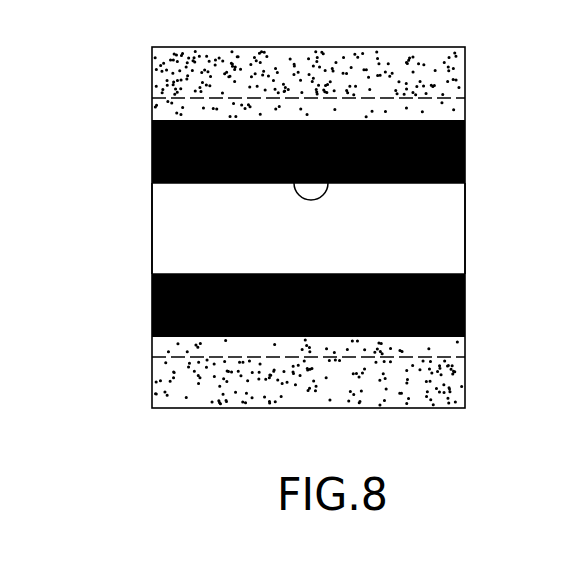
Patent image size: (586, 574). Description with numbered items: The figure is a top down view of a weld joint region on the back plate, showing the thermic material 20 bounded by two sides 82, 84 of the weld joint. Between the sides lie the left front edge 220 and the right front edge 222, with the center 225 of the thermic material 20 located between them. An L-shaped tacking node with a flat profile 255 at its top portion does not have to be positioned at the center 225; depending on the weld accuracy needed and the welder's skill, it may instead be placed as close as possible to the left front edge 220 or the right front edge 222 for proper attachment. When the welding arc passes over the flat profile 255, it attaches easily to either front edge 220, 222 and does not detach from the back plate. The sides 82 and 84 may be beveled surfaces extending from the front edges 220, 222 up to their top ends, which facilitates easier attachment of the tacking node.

The side of the weld joint 82 is at (465, 152).
The side of the weld joint 84 is at (465, 305).
The thermic material 20 is at (177, 218).
The left front edge 220 is at (403, 183).
The right front edge 222 is at (223, 274).
The center 225 is at (323, 231).
The flat profile 255 is at (298, 193).